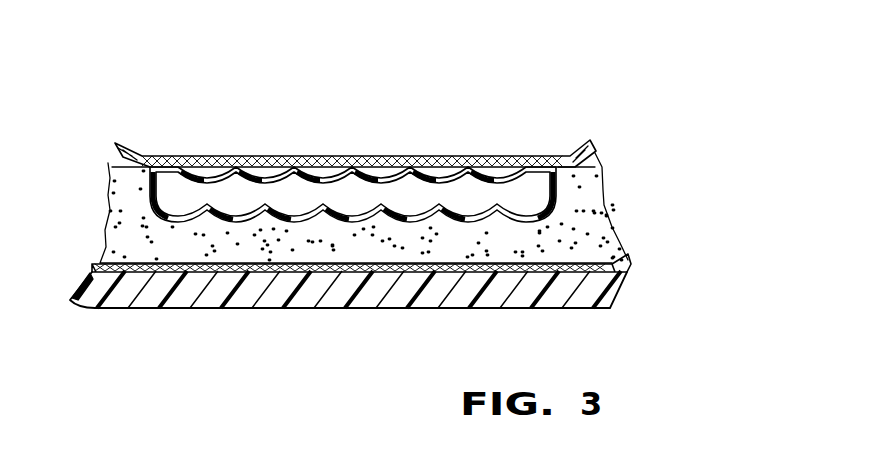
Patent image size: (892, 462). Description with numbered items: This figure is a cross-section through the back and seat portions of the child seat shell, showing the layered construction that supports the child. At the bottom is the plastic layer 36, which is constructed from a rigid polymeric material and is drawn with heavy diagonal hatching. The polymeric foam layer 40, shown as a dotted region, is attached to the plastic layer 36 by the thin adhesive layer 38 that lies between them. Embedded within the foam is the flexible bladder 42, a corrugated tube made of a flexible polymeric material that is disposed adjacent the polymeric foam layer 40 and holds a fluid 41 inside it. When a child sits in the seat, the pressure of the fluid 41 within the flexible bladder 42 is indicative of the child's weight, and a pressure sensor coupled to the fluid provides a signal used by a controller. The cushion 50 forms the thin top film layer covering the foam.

The plastic layer 36 is at (614, 290).
The adhesive layer 38 is at (614, 259).
The polymeric foam layer 40 is at (598, 188).
The fluid 41 is at (242, 182).
The flexible bladder 42 is at (180, 168).
The cushion 50 is at (595, 148).